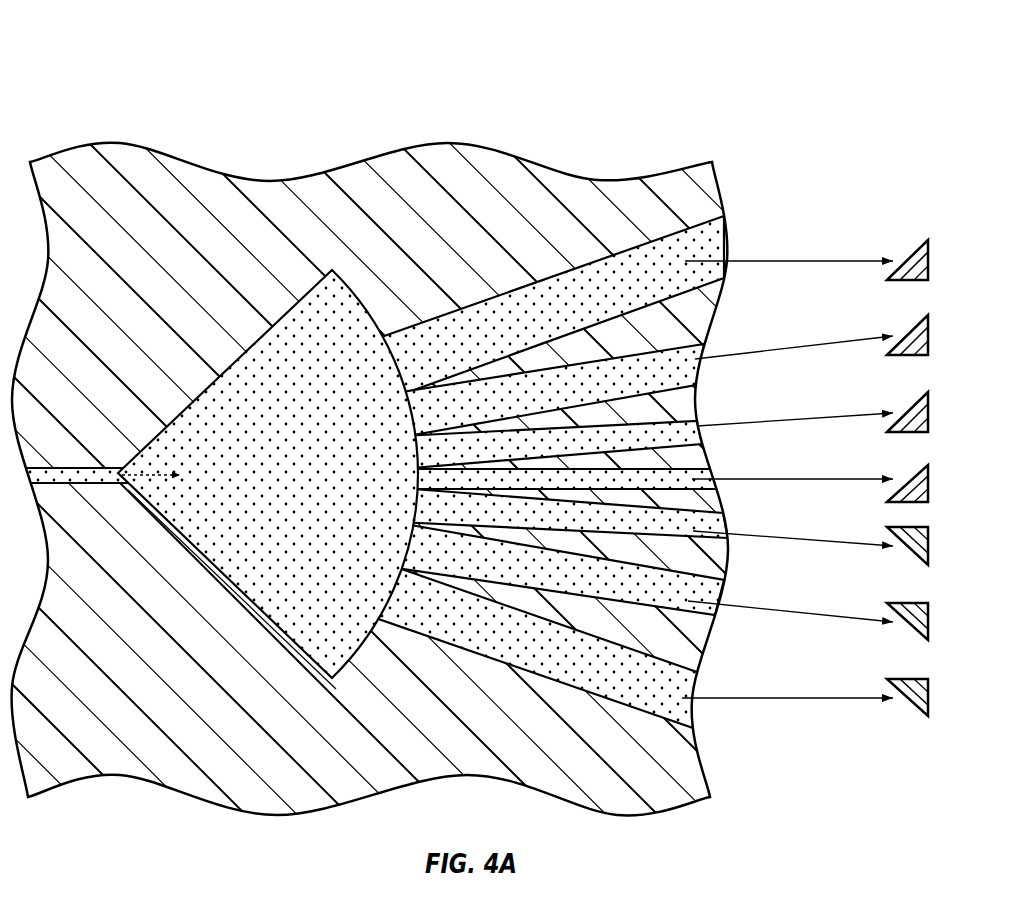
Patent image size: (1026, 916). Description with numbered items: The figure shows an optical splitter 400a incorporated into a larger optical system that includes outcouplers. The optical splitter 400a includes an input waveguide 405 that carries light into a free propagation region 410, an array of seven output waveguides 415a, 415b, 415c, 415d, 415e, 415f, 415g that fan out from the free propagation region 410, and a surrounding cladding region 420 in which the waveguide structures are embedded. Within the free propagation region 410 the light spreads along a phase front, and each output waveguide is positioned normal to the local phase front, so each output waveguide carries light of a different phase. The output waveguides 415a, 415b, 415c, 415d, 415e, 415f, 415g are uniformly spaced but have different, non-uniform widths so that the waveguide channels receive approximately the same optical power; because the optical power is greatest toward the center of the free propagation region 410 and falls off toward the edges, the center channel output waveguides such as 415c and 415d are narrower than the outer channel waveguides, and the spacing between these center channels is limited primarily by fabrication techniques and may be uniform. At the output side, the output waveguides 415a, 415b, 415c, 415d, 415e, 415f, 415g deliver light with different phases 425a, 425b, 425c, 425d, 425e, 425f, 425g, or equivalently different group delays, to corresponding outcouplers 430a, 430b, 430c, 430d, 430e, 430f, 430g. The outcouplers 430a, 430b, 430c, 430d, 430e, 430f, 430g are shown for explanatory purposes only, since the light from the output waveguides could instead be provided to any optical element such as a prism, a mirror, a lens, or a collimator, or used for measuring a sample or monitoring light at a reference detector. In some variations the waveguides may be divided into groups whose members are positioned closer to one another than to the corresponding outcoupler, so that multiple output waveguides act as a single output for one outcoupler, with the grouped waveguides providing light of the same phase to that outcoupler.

The optical splitter 400a is at (513, 458).
The input waveguide 405 is at (44, 405).
The free propagation region 410 is at (378, 335).
The output waveguide 415a is at (716, 240).
The output waveguide 415b is at (690, 368).
The output waveguide 415c is at (688, 435).
The output waveguide 415d is at (713, 487).
The output waveguide 415e is at (722, 540).
The output waveguide 415f is at (715, 610).
The output waveguide 415g is at (690, 717).
The cladding region 420 is at (273, 195).
The light with different phase 425a is at (805, 258).
The light with different phase 425b is at (805, 345).
The light with different phase 425c is at (818, 417).
The light with different phase 425d is at (820, 477).
The light with different phase 425e is at (821, 541).
The light with different phase 425f is at (815, 614).
The light with different phase 425g is at (810, 696).
The outcoupler 430a is at (906, 255).
The outcoupler 430b is at (906, 331).
The outcoupler 430c is at (906, 406).
The outcoupler 430d is at (905, 476).
The outcoupler 430e is at (907, 552).
The outcoupler 430f is at (907, 628).
The outcoupler 430g is at (907, 705).